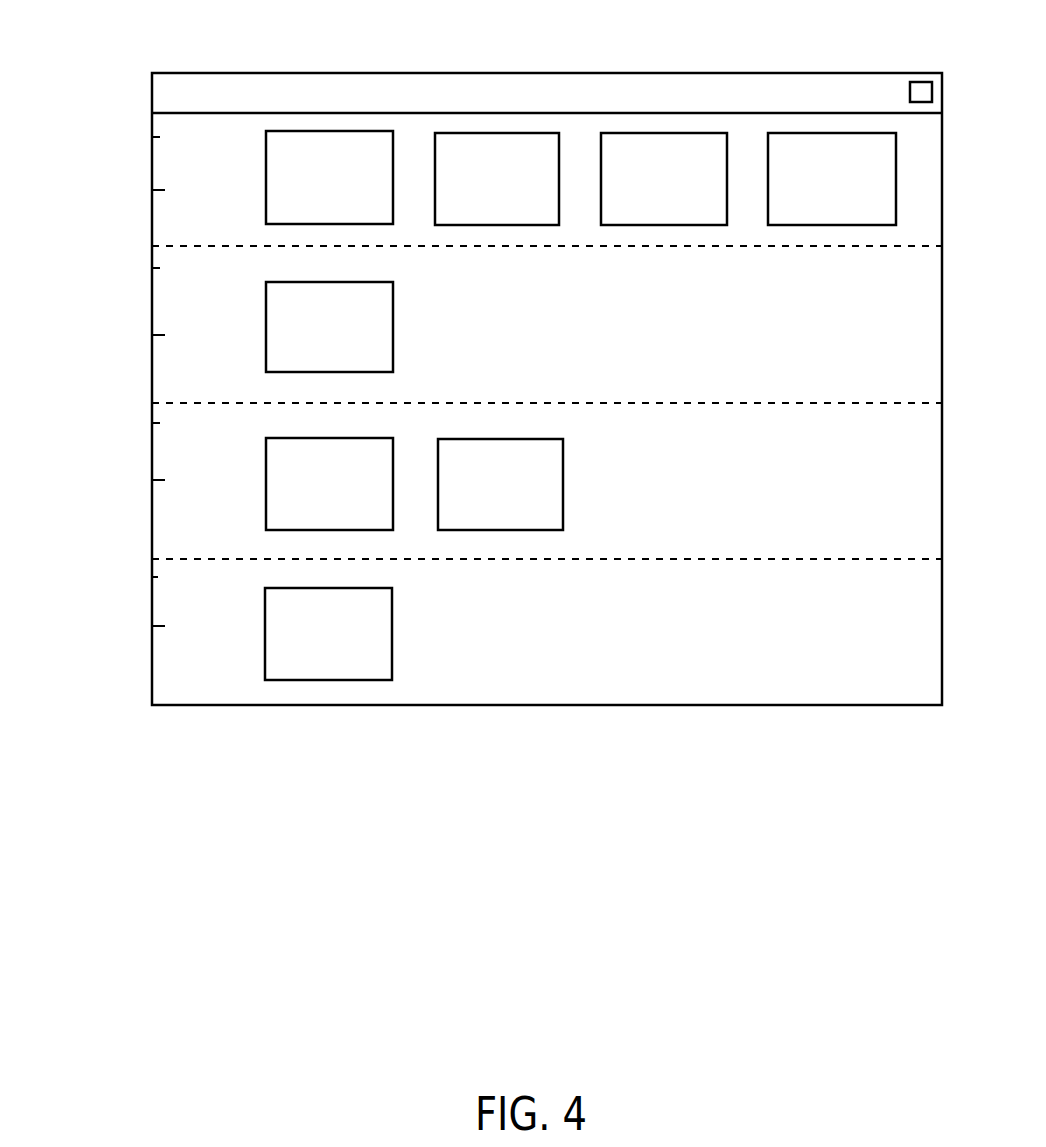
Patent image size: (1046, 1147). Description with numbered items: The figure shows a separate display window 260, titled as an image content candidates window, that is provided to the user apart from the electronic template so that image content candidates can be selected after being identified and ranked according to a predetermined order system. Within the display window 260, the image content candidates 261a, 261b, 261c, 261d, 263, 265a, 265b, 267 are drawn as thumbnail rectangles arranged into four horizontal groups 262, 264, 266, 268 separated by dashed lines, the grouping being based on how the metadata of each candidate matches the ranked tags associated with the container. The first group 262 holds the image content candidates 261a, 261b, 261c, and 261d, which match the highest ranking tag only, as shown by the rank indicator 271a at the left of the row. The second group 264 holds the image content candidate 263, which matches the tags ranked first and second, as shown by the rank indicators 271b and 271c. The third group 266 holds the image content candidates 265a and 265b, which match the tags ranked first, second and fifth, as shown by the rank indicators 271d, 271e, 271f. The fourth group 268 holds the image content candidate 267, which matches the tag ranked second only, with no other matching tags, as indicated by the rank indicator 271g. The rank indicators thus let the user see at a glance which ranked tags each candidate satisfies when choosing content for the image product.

The display window 260 is at (575, 87).
The image content candidate 261a is at (275, 178).
The image content candidate 261b is at (520, 218).
The image content candidate 261c is at (684, 212).
The image content candidate 261d is at (858, 212).
The group 262 is at (160, 190).
The image content candidate 263 is at (272, 342).
The group 264 is at (160, 335).
The image content candidate 265a is at (272, 493).
The image content candidate 265b is at (515, 522).
The group 266 is at (160, 480).
The image content candidate 267 is at (270, 640).
The group 268 is at (160, 626).
The rank indicator 271a is at (158, 137).
The rank indicator 271b is at (158, 268).
The rank indicator 271c is at (205, 273).
The rank indicator 271d is at (158, 423).
The rank indicator 271e is at (185, 437).
The rank indicator 271f is at (215, 425).
The rank indicator 271g is at (156, 577).